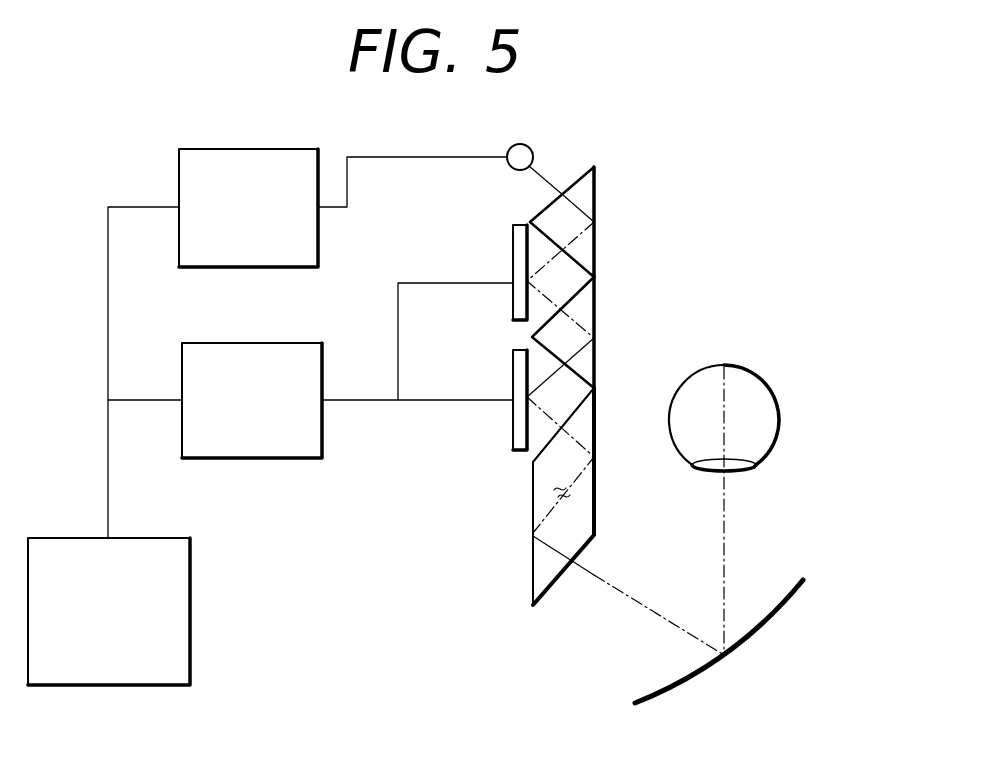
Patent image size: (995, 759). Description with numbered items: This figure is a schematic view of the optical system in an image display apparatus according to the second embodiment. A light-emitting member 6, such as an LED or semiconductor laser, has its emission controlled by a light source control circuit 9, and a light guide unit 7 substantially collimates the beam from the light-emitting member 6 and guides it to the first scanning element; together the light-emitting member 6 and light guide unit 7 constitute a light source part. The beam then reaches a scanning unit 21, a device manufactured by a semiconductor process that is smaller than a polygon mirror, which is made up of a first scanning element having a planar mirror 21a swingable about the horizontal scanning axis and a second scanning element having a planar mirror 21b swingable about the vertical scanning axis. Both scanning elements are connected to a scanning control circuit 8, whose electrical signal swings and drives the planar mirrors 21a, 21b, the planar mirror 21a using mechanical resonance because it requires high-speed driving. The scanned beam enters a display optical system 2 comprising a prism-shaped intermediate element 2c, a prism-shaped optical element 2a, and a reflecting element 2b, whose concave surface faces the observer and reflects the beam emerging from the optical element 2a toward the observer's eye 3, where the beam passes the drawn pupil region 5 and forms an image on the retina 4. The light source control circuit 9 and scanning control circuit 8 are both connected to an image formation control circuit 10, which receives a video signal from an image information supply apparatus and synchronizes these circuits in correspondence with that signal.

The display optical system 2 is at (634, 509).
The optical element 2a is at (533, 563).
The reflecting element 2b is at (688, 682).
The intermediate element 2c is at (596, 302).
The observer's eye 3 is at (733, 416).
The retina 4 is at (716, 368).
The pupil 5 is at (728, 473).
The light-emitting member 6 is at (531, 146).
The light guide unit 7 is at (616, 188).
The scanning control circuit 8 is at (324, 358).
The light source control circuit 9 is at (294, 148).
The image formation control circuit 10 is at (190, 605).
The scanning unit 21 is at (424, 358).
The planar mirror 21a is at (512, 252).
The planar mirror 21b is at (508, 432).